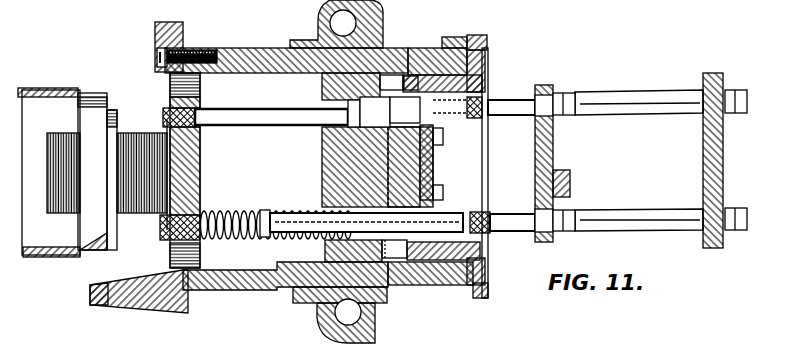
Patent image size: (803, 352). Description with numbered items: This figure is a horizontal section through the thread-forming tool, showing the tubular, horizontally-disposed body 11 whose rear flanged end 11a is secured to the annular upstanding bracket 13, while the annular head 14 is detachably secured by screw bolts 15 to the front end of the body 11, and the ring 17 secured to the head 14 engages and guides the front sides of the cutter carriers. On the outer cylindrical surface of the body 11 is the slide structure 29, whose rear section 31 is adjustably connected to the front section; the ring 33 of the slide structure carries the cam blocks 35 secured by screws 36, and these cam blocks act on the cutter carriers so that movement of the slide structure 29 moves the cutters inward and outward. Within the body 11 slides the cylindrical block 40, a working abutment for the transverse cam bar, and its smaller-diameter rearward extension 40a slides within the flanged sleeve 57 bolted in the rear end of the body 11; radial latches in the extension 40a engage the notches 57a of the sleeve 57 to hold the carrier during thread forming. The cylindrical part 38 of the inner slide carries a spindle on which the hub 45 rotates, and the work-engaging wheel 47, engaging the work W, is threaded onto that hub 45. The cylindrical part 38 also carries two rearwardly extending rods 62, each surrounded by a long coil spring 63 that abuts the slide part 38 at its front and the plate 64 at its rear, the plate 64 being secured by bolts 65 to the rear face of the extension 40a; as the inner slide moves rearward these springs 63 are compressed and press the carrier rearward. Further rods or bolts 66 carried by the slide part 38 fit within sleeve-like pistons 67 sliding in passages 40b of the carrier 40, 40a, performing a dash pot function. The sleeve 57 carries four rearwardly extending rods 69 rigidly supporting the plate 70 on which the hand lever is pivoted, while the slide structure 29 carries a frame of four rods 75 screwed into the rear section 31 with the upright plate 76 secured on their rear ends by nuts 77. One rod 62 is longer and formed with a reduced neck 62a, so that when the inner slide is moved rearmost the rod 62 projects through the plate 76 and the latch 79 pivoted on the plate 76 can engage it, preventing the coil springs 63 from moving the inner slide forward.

The work piece W is at (45, 78).
The tubular body 11 is at (245, 48).
The rear flanged end 11a is at (457, 37).
The annular upstanding bracket 13 is at (478, 35).
The annular head 14 is at (155, 28).
The screw bolts 15 is at (201, 48).
The ring 17 is at (92, 305).
The slide structure 29 is at (423, 343).
The rear section 31 is at (298, 40).
The ring 33 is at (96, 0).
The cam blocks 35 is at (131, 6).
The screws 36 is at (166, 6).
The cylindrical part of the slide 38 is at (170, 256).
The cylindrical block 40 is at (322, 157).
The rearward extension 40a is at (433, 160).
The passages 40b is at (391, 167).
The hub 45 is at (128, 132).
The work-engaging wheel 47 is at (88, 250).
The flanged sleeve 57 is at (490, 72).
The notches 57a is at (417, 88).
The rods 62 is at (287, 216).
The reduced section or neck 62a is at (473, 210).
The coil spring 63 is at (232, 212).
The plate 64 is at (443, 178).
The bolts 65 is at (443, 137).
The rods or bolts 66 is at (252, 112).
The sleeve-like pistons 67 is at (320, 90).
The rods 69 is at (648, 92).
The plate 70 is at (723, 160).
The rods 75 is at (435, 166).
The plate 76 is at (555, 140).
The nuts 77 is at (580, 93).
The latch 79 is at (570, 193).